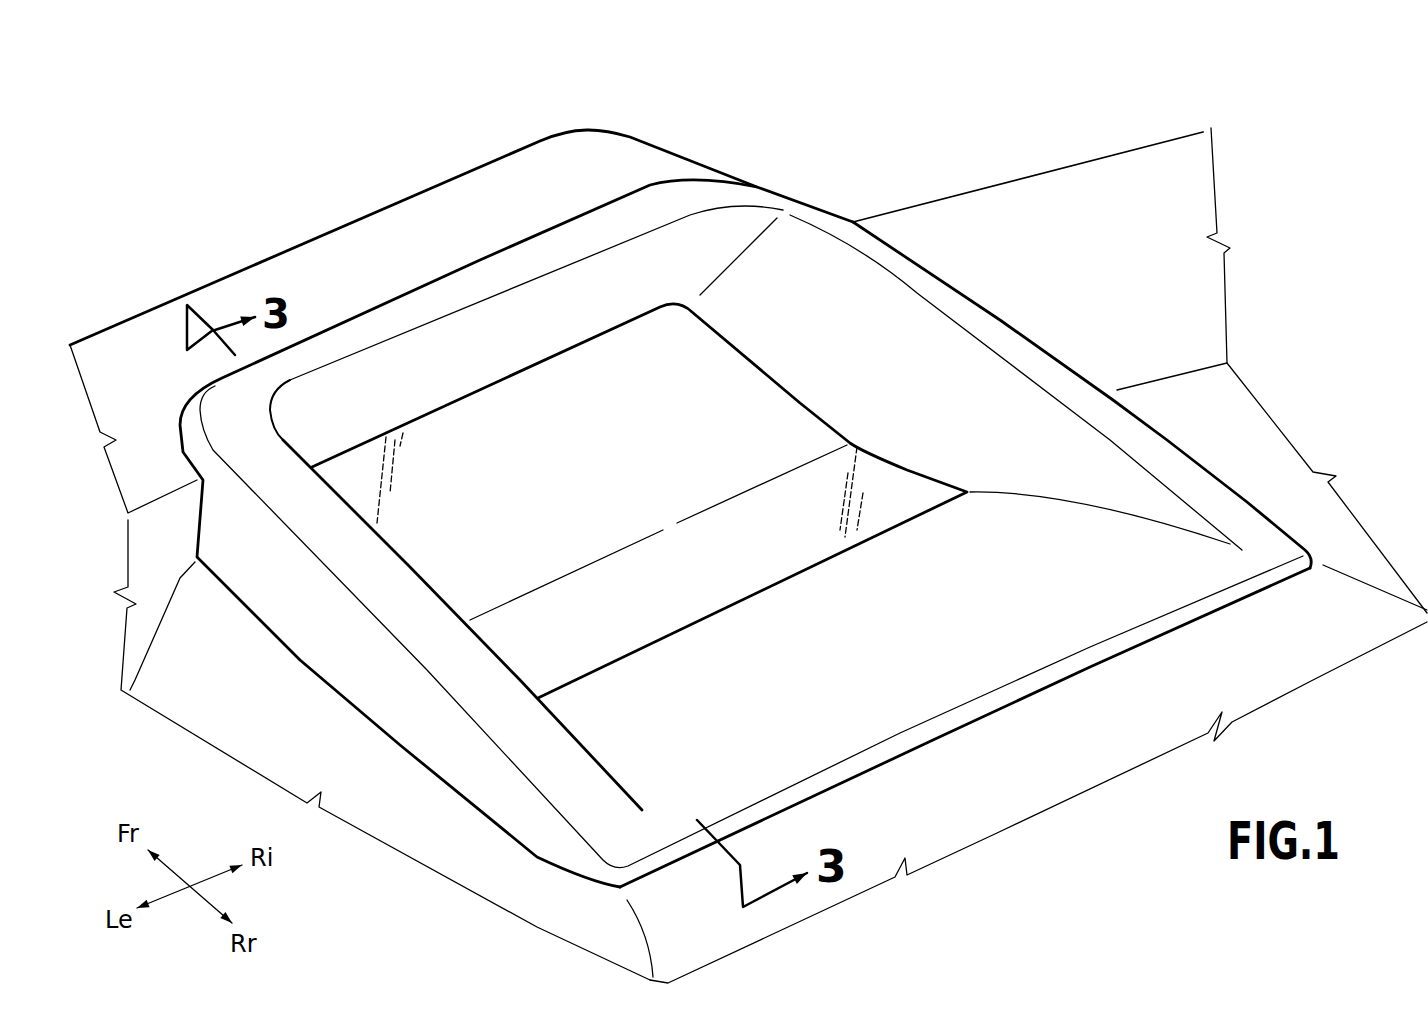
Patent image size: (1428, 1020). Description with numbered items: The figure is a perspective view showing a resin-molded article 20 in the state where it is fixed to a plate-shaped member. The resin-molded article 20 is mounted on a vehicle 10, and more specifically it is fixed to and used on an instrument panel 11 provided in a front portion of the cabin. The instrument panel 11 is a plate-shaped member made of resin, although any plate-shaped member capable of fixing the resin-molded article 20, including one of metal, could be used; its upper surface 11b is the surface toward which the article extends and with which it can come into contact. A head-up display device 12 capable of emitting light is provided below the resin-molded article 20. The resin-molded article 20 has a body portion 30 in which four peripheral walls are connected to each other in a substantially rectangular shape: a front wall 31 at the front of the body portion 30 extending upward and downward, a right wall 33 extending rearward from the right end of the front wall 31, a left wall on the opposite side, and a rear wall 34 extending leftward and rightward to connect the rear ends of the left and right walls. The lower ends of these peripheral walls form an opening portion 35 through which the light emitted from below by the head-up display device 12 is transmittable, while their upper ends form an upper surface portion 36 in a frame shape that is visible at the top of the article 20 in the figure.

The vehicle 10 is at (163, 150).
The instrument panel 11 is at (748, 555).
The upper surface 11b is at (532, 193).
The head-up display device 12 is at (679, 343).
The resin-molded article 20 is at (751, 627).
The body portion 30 is at (870, 252).
The front wall 31 is at (614, 288).
The right wall 33 is at (947, 388).
The rear wall 34 is at (954, 668).
The opening portion 35 is at (631, 414).
The upper surface portion 36 is at (424, 307).